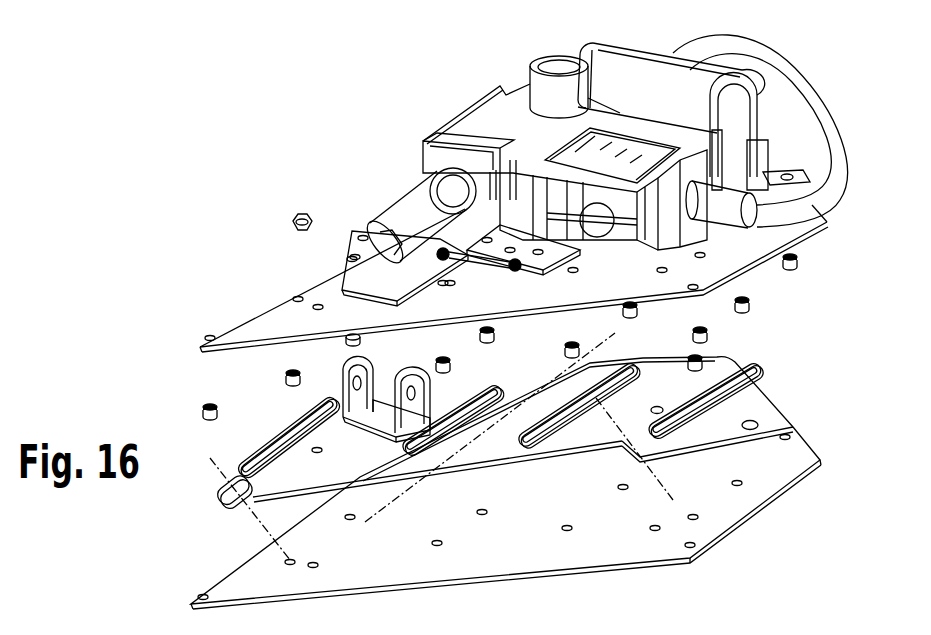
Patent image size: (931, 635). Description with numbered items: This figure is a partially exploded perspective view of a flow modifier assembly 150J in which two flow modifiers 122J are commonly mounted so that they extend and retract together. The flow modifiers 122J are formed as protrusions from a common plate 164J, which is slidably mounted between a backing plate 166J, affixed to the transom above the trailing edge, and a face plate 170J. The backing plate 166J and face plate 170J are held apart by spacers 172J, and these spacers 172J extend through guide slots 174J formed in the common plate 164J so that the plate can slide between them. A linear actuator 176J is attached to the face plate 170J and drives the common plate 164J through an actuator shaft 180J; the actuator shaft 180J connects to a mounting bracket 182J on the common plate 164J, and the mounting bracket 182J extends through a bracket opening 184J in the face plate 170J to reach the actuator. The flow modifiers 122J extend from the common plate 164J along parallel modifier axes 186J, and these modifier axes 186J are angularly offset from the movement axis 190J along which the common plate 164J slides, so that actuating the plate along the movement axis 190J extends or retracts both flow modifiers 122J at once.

The assembly 150J is at (482, 322).
The linear actuator 176J is at (570, 155).
The actuator shaft 180J is at (403, 218).
The bracket opening 184J is at (347, 268).
The face plate 170J is at (505, 278).
The spacers 172J is at (457, 337).
The mounting bracket 182J is at (431, 399).
The guide slots 174J is at (536, 423).
The flow modifiers 122J is at (432, 491).
The common plate 164J is at (523, 464).
The backing plate 166J is at (506, 483).
The modifier axes 186J is at (416, 486).
The movement axis 190J is at (490, 435).